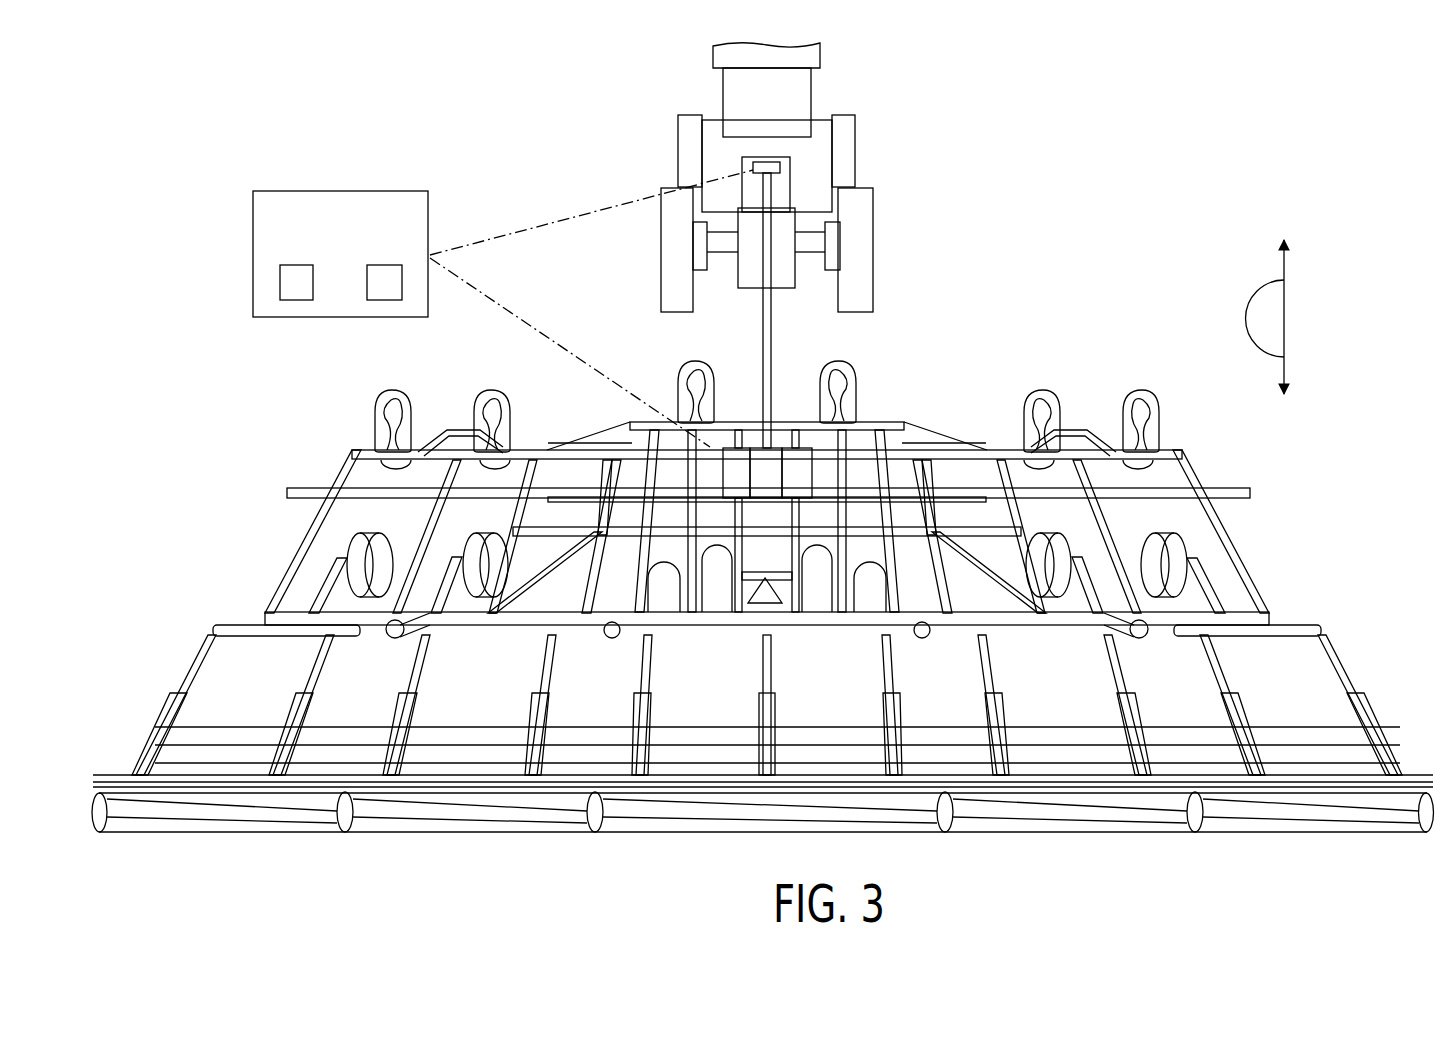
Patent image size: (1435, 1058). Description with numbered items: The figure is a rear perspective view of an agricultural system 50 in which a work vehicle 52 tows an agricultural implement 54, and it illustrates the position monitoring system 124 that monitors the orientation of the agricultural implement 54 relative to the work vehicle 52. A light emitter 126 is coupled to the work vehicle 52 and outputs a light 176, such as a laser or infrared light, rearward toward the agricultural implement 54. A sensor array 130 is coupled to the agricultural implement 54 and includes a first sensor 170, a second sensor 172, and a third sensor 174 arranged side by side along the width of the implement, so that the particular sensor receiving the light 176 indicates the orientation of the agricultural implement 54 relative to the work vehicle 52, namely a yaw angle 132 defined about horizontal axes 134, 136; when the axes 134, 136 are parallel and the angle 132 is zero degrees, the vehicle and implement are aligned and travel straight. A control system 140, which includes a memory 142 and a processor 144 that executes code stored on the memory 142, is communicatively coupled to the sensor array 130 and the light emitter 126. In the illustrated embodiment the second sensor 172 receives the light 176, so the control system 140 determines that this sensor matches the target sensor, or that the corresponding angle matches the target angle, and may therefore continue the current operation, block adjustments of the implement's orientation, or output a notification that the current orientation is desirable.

The agricultural system 50 is at (767, 367).
The work vehicle 52 is at (829, 245).
The agricultural implement 54 is at (1372, 440).
The position monitoring system 124 is at (455, 108).
The light emitter 126 is at (790, 170).
The sensor array 130 is at (761, 425).
The angle 132 is at (1264, 317).
The axis 134 is at (1284, 265).
The axis 136 is at (1284, 370).
The control system 140 is at (296, 276).
The memory 142 is at (296, 300).
The processor 144 is at (385, 300).
The first sensor 170 is at (721, 475).
The second sensor 172 is at (775, 446).
The third sensor 174 is at (813, 476).
The light 176 is at (765, 305).